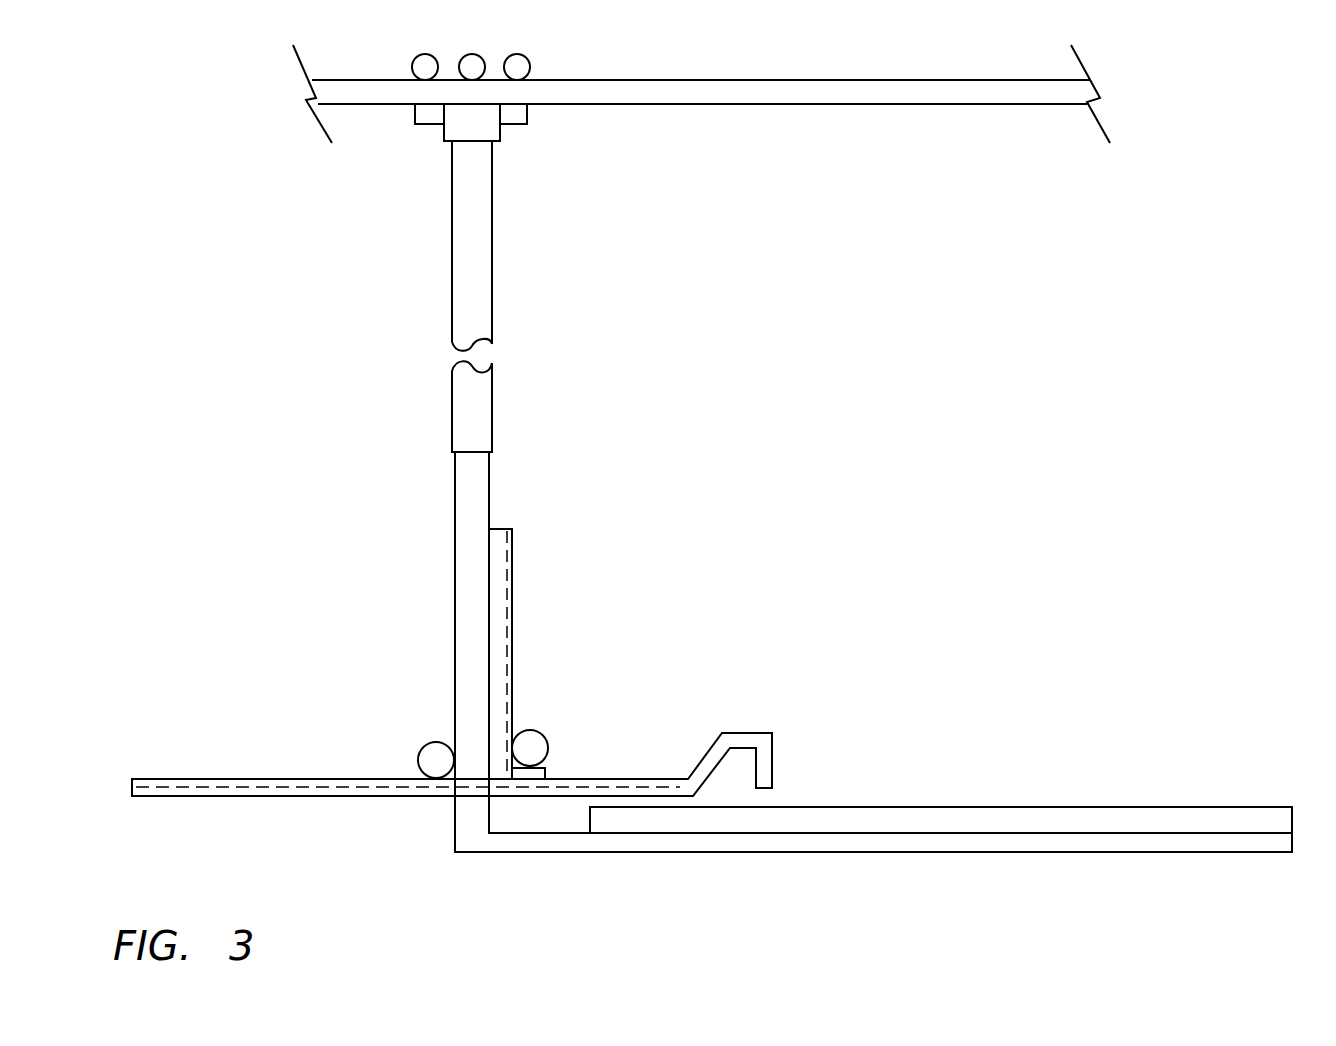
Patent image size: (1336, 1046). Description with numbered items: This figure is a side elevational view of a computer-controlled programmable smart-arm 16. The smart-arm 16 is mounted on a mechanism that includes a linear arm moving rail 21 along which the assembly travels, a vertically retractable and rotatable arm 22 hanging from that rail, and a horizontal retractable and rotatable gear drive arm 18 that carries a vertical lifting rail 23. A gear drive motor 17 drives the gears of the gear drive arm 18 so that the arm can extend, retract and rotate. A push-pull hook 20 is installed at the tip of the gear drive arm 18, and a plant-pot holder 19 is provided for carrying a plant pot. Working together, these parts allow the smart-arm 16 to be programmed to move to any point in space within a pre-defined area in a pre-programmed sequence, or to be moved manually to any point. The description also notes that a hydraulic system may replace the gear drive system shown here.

The smart-arm 16 is at (228, 131).
The gear drive motor 17 is at (418, 753).
The gear drive arm 18 is at (592, 779).
The plant-pot holder 19 is at (882, 806).
The push-pull hook 20 is at (772, 750).
The linear arm moving rail 21 is at (732, 105).
The vertically retractable and rotatable arm 22 is at (490, 483).
The vertical lifting rail 23 is at (515, 595).